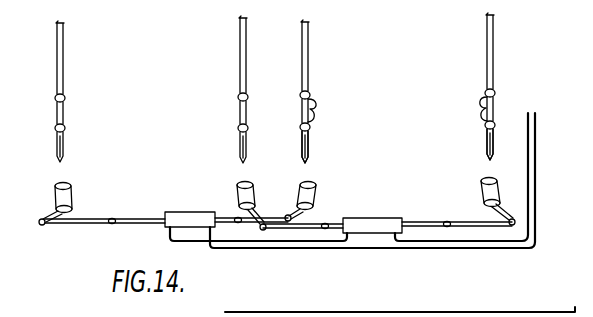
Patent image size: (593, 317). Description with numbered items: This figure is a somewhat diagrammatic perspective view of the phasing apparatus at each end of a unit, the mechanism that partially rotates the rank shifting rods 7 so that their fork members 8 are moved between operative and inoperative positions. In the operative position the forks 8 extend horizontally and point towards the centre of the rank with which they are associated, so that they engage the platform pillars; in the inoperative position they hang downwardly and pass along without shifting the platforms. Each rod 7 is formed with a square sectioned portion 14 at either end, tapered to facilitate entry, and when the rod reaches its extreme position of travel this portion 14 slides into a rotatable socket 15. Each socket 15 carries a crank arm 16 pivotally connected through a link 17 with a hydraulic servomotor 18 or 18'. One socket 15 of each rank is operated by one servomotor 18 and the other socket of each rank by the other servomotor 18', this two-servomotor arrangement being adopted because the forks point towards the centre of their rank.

The rank shifting rod 7 is at (63, 58).
The fork member 8 is at (317, 104).
The square sectioned portion 14 is at (310, 150).
The socket 15 is at (72, 195).
The crank arm 16 is at (42, 218).
The link 17 is at (77, 224).
The hydraulic servomotor 18' is at (190, 205).
The hydraulic servomotor 18 is at (372, 209).